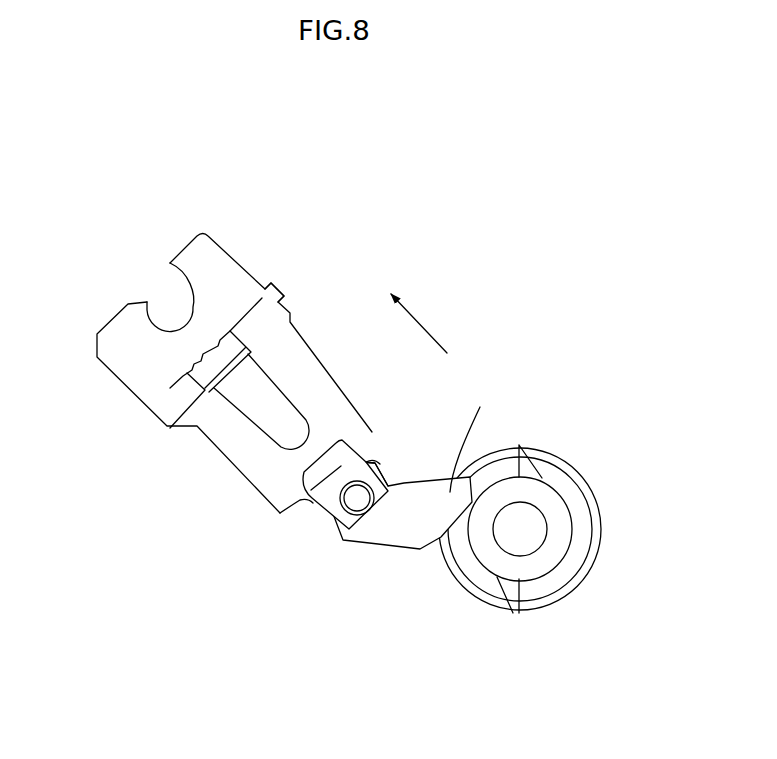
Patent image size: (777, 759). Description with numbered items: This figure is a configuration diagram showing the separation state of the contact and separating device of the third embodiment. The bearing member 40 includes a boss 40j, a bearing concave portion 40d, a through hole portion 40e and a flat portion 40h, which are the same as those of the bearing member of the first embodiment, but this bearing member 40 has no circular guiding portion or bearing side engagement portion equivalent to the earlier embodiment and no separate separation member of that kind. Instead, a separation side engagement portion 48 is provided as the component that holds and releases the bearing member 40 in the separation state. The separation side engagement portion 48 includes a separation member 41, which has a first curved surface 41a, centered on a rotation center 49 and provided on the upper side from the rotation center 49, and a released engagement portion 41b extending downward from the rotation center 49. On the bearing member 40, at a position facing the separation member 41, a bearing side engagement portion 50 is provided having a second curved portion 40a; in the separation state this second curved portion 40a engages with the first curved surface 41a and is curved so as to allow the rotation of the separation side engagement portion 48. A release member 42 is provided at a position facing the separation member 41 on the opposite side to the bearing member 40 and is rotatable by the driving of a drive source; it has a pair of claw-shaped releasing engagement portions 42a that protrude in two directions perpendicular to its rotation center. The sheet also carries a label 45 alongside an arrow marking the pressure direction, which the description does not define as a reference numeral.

The bearing member 40 is at (289, 267).
The second curved portion 40a is at (280, 513).
The bearing concave portion 40d is at (147, 303).
The through hole portion 40e is at (292, 312).
The flat portion 40h is at (296, 378).
The boss 40j is at (167, 428).
The separation member 41 is at (397, 556).
The first curved surface 41a is at (380, 460).
The released engagement portion 41b is at (453, 467).
The release member 42 is at (571, 523).
The releasing engagement portions 42a is at (522, 443).
The pressure unit 45 is at (402, 203).
The separation side engagement portion 48 is at (385, 459).
The rotation center 49 is at (353, 513).
The bearing side engagement portion 50 is at (327, 436).